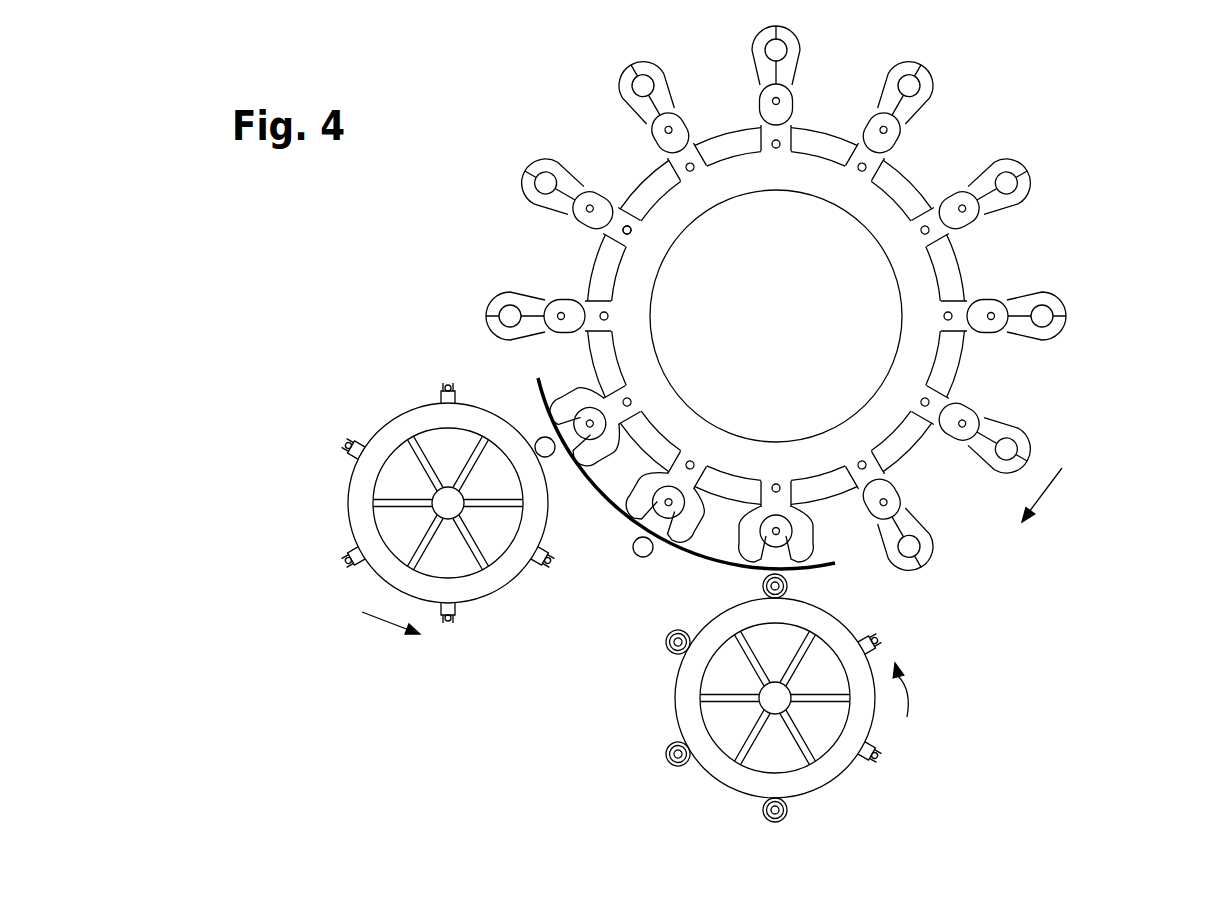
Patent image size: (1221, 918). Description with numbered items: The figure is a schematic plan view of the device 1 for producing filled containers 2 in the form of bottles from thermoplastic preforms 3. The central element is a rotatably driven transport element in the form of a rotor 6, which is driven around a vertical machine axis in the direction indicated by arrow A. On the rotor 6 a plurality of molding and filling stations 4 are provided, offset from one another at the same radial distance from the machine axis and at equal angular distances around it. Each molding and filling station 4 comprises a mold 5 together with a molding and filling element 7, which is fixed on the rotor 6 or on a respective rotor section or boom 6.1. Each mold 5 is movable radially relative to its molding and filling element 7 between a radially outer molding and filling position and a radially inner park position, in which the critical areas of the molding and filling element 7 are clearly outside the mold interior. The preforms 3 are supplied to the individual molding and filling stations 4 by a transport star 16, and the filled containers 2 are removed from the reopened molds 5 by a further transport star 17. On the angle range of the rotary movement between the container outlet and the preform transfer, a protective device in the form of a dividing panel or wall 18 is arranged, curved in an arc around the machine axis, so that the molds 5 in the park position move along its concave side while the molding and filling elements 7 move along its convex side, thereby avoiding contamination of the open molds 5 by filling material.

The device 1 is at (774, 341).
The container 2 is at (667, 752).
The preform 3 is at (334, 571).
The molding and filling station 4 is at (458, 309).
The mold 5 is at (1052, 338).
The rotor 6 is at (675, 207).
The boom 6.1 is at (622, 232).
The molding and filling element 7 is at (1045, 314).
The transport star 16 is at (396, 472).
The transport star 17 is at (699, 698).
The wall 18 is at (685, 552).
The direction of rotation A is at (1053, 499).